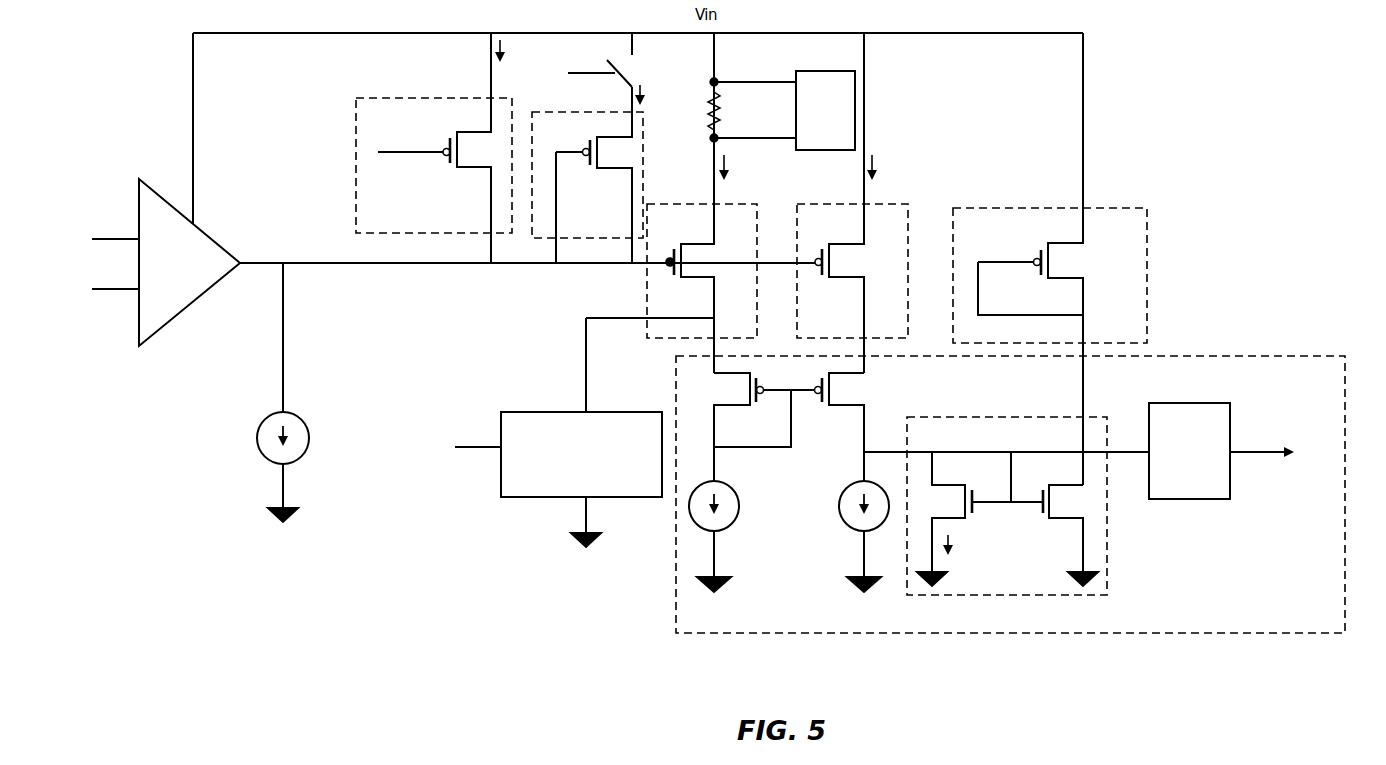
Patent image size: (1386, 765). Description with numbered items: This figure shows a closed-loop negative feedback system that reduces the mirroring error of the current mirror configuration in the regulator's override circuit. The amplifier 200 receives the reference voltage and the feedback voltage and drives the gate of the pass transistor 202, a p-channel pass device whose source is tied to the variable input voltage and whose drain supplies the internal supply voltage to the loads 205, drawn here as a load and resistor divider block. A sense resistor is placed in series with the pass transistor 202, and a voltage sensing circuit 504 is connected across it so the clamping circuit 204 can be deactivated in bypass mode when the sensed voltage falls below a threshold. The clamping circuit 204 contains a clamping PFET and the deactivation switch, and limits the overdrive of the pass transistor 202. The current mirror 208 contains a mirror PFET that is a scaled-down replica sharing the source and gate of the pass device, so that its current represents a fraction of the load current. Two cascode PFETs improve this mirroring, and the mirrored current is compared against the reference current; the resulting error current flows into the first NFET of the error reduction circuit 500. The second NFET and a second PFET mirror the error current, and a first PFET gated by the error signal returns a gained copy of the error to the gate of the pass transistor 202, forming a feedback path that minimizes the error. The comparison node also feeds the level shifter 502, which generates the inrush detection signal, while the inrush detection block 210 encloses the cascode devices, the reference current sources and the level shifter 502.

The amplifier 200 is at (166, 262).
The error reduction circuit 500 is at (751, 314).
The clamping circuit 204 is at (586, 148).
The pass transistor 202 is at (723, 203).
The current mirror 208 is at (852, 203).
The voltage sensing circuit 504 is at (825, 110).
The loads 205 is at (584, 432).
The inrush detection circuit 210 is at (1010, 494).
The level shifter 502 is at (1189, 451).